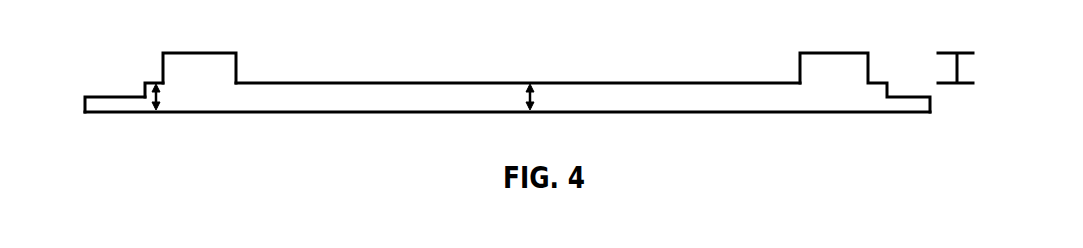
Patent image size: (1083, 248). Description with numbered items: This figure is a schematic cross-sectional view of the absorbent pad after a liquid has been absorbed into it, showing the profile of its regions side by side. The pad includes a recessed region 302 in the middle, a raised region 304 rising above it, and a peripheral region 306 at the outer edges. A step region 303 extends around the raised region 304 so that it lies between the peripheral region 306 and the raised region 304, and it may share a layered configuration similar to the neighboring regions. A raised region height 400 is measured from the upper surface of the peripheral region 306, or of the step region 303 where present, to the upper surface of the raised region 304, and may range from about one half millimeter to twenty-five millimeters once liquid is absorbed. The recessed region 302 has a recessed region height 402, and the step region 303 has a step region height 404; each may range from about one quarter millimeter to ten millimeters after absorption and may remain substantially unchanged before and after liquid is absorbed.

The recessed region 302 is at (643, 82).
The step region 303 is at (147, 82).
The raised region 304 is at (203, 53).
The peripheral region 306 is at (120, 96).
The raised region height 400 is at (957, 72).
The recessed region height 402 is at (528, 95).
The step region height 404 is at (160, 99).